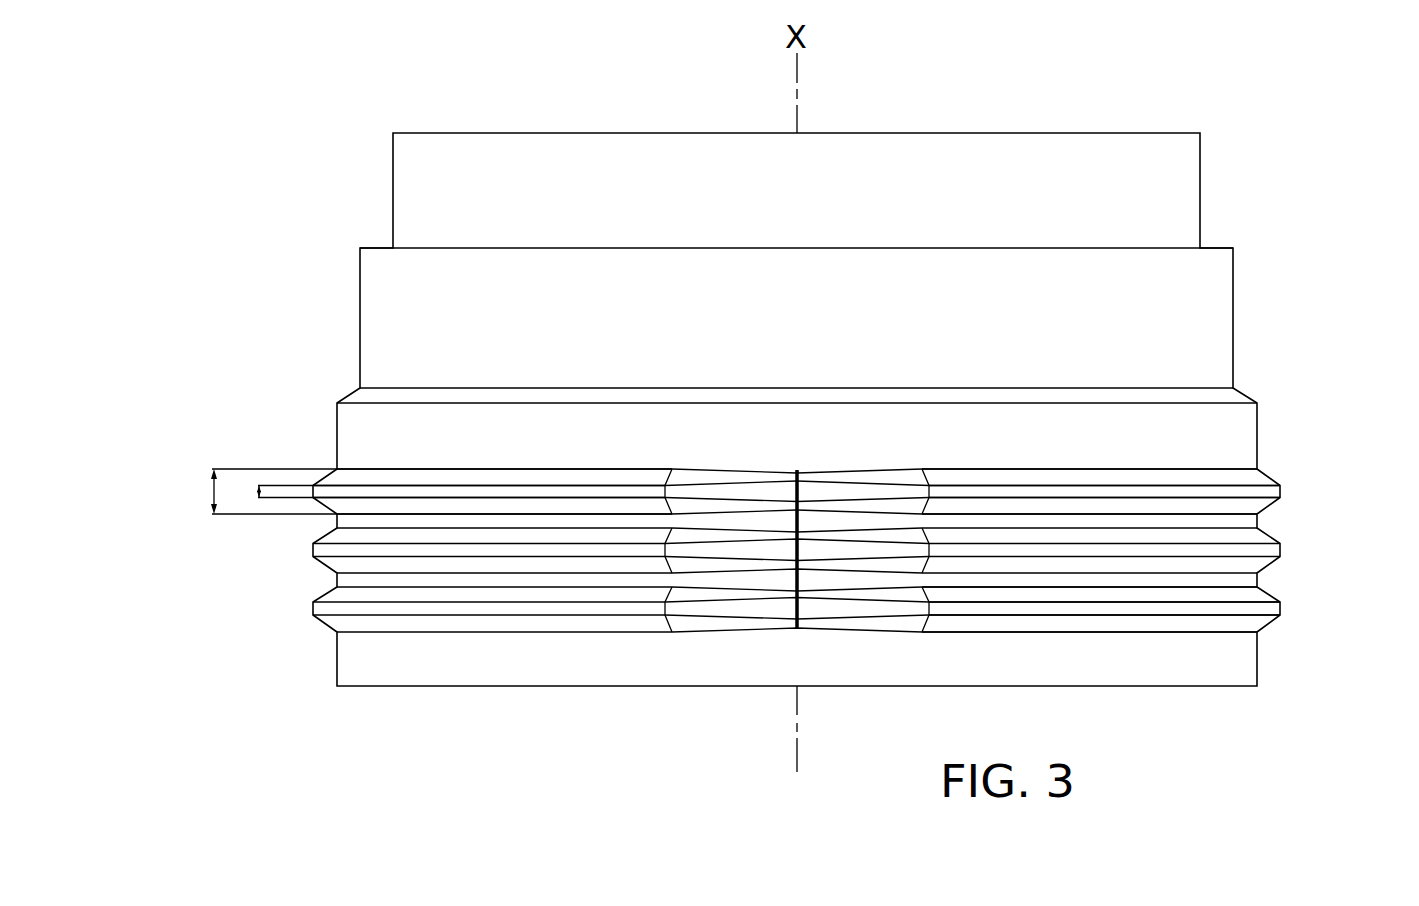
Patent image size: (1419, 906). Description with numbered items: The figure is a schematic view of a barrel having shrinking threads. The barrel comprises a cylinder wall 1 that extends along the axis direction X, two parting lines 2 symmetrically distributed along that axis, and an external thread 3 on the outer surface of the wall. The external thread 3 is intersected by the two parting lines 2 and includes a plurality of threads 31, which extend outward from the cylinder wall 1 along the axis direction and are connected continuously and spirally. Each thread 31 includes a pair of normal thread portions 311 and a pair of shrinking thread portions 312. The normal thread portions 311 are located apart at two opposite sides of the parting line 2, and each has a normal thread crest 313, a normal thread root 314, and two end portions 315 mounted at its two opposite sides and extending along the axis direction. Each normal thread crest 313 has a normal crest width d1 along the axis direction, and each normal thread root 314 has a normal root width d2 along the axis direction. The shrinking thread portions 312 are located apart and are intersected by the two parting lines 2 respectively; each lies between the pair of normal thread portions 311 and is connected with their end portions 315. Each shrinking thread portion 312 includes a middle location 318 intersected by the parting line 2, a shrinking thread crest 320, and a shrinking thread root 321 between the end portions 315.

The cylinder wall 1 is at (348, 295).
The parting line 2 is at (785, 616).
The external thread 3 is at (1282, 471).
The thread 31 is at (1108, 610).
The normal thread portion 311 is at (1090, 490).
The shrinking thread portion 312 is at (845, 488).
The normal thread crest 313 is at (380, 490).
The normal thread root 314 is at (413, 468).
The end portion 315 is at (672, 470).
The middle location 318 is at (797, 470).
The shrinking thread crest 320 is at (740, 492).
The shrinking thread root 321 is at (703, 468).
The normal crest width d1 is at (270, 492).
The normal root width d2 is at (257, 491).